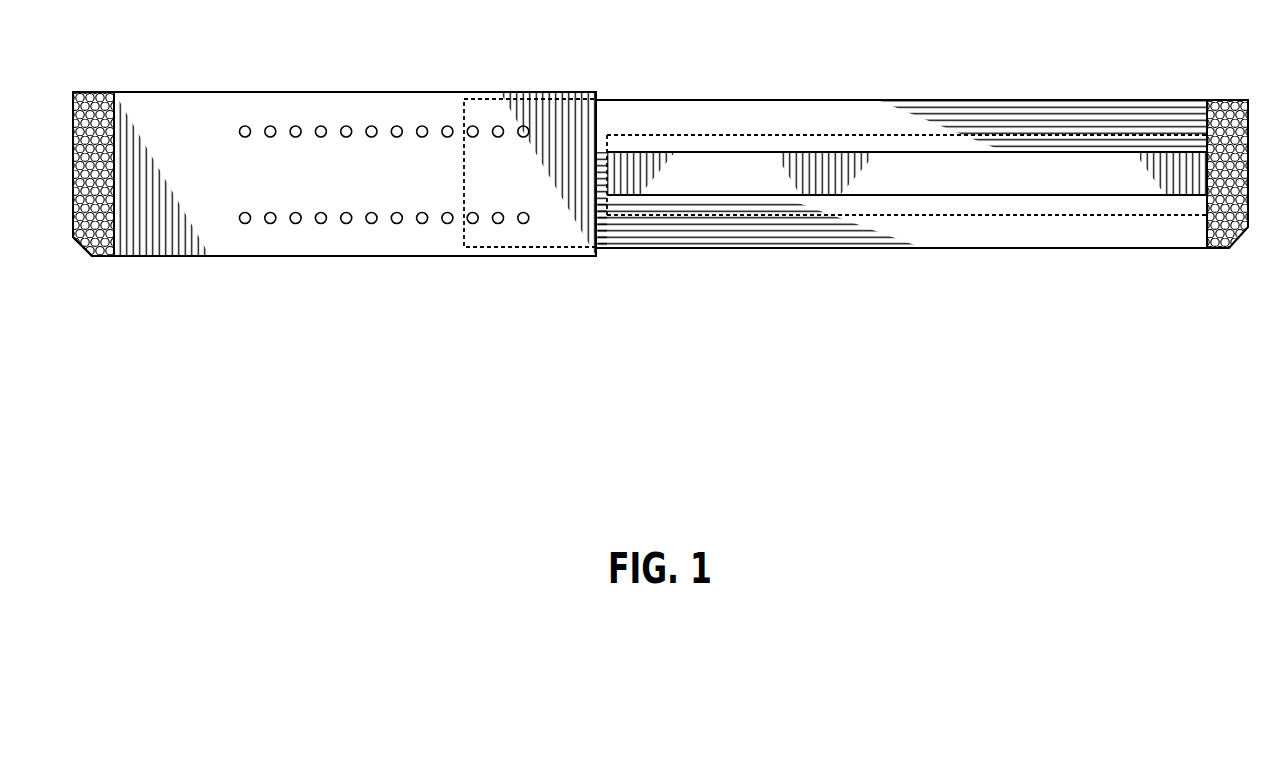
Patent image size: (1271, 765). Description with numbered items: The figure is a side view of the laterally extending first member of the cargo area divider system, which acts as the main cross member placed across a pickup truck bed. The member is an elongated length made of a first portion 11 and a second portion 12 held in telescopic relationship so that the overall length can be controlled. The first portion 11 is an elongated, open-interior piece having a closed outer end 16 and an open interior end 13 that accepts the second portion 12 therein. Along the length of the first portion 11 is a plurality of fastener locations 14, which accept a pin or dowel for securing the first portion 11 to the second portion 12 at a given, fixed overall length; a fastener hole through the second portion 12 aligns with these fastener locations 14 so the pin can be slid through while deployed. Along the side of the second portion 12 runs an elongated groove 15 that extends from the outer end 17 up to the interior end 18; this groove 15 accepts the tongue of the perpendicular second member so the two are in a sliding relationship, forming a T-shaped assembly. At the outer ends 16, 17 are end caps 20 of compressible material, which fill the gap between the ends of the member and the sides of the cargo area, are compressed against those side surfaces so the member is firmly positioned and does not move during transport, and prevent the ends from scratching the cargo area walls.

The first portion 11 is at (362, 282).
The second portion 12 is at (946, 284).
The open interior end 13 is at (599, 117).
The fastener locations 14 is at (422, 126).
The elongated groove 15 is at (895, 170).
The closed outer end 16 is at (117, 104).
The outer end 17 is at (1207, 120).
The interior end 18 is at (465, 150).
The end caps 20 is at (100, 255).